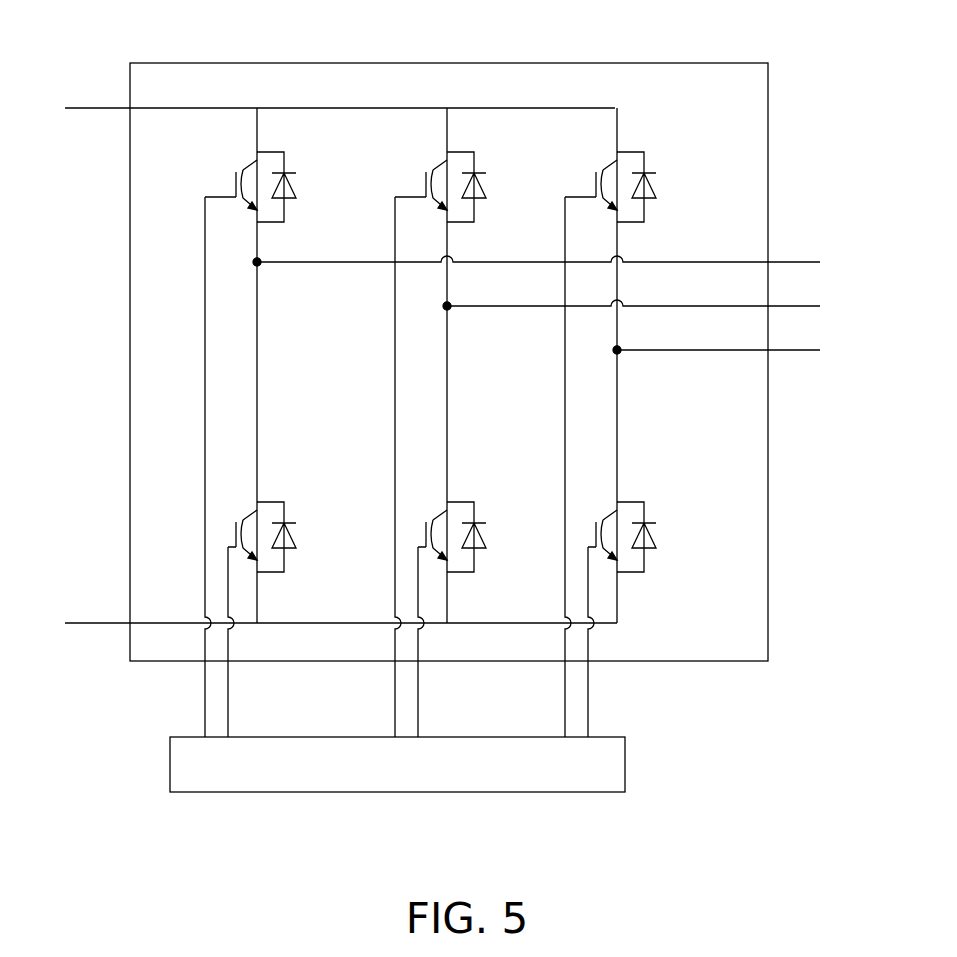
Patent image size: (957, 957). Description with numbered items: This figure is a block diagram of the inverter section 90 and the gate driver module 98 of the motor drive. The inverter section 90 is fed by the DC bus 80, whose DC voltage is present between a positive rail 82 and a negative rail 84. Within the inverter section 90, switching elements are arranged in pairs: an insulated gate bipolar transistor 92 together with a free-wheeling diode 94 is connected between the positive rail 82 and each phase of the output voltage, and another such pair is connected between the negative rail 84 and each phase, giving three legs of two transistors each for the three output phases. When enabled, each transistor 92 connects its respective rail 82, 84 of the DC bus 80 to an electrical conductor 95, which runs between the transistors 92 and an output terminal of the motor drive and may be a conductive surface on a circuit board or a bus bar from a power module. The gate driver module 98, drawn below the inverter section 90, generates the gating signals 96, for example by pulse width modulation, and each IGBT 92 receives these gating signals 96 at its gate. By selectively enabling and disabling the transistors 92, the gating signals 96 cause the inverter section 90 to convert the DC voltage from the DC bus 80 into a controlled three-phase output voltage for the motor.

The DC bus 80 is at (108, 118).
The positive rail 82 is at (93, 108).
The negative rail 84 is at (90, 625).
The inverter section 90 is at (448, 63).
The insulated gate bipolar transistor 92 is at (222, 186).
The free-wheeling diode 94 is at (290, 175).
The electrical conductor 95 is at (795, 255).
The gating signals 96 is at (227, 707).
The gate driver module 98 is at (278, 793).